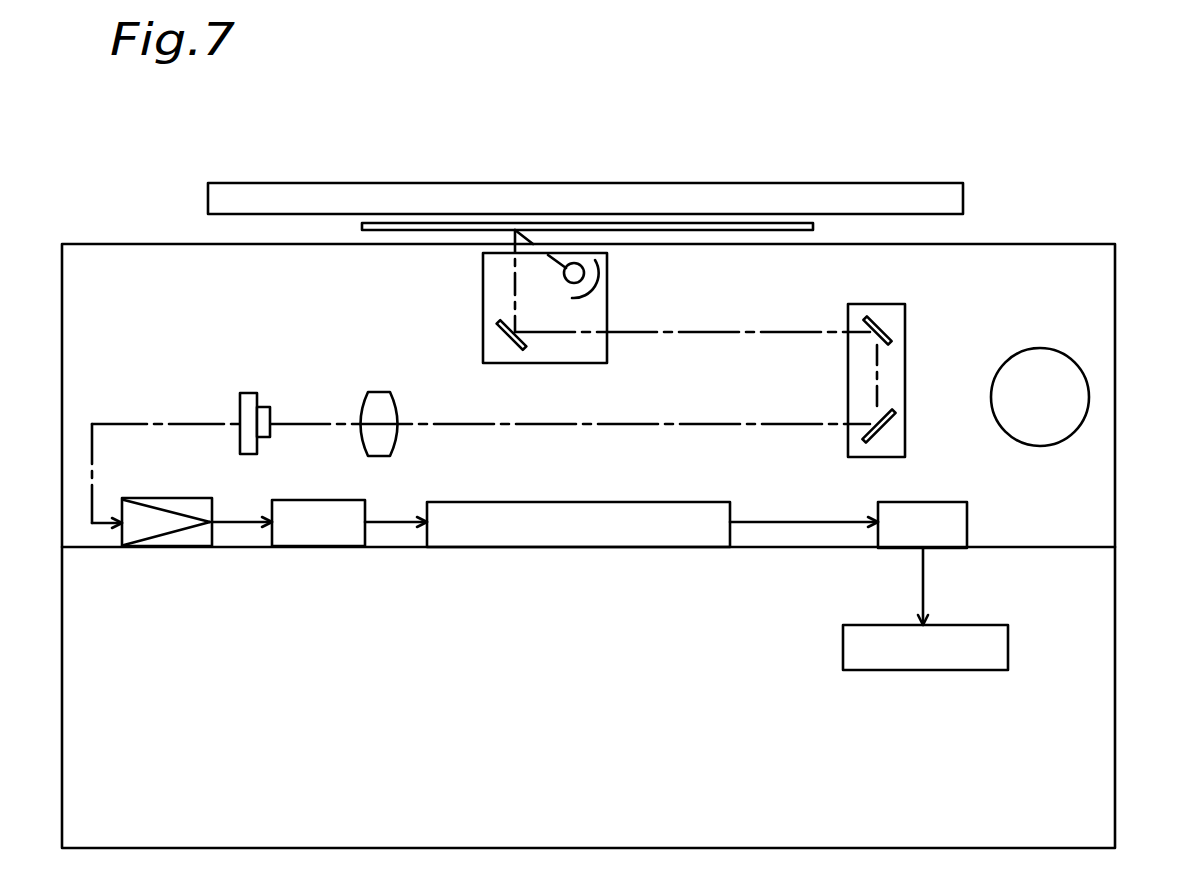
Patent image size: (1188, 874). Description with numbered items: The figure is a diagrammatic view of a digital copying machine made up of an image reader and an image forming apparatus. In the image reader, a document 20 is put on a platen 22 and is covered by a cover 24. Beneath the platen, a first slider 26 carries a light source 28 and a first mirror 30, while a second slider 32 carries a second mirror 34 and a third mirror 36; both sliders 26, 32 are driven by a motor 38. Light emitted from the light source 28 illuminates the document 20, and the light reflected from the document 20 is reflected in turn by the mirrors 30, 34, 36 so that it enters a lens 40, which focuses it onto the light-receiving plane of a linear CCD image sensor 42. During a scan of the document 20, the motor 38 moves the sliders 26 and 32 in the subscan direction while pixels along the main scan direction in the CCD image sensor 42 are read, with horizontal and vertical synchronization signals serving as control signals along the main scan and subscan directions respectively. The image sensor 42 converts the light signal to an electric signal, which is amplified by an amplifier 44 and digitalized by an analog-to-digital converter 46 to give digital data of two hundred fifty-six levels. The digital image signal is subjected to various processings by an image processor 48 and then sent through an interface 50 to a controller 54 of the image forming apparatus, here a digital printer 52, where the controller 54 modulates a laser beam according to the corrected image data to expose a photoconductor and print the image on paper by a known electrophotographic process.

The document 20 is at (390, 223).
The platen 22 is at (988, 245).
The cover 24 is at (880, 184).
The first slider 26 is at (607, 302).
The light source 28 is at (584, 272).
The first mirror 30 is at (513, 348).
The second slider 32 is at (905, 325).
The second mirror 34 is at (875, 318).
The third mirror 36 is at (891, 426).
The motor 38 is at (1088, 378).
The lens 40 is at (378, 392).
The linear CCD image sensor 42 is at (250, 393).
The amplifier 44 is at (168, 546).
The analog-to-digital converter 46 is at (327, 546).
The image processor 48 is at (572, 547).
The interface 50 is at (892, 548).
The digital printer 52 is at (932, 754).
The controller 54 is at (1008, 650).